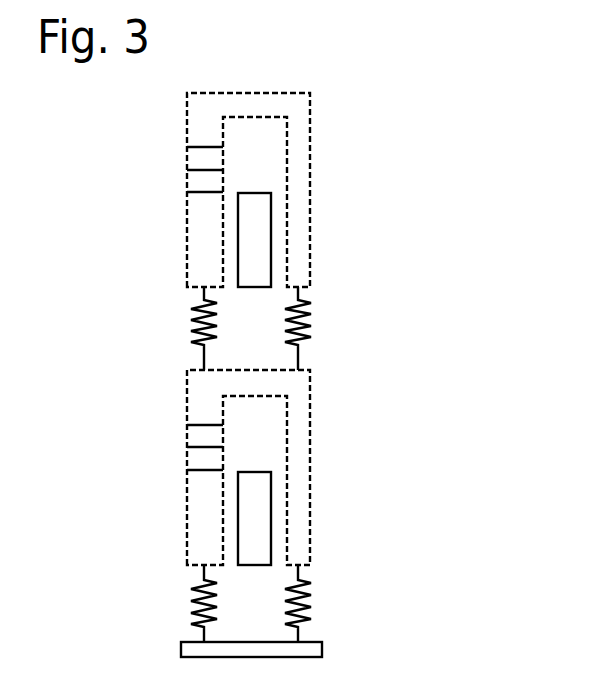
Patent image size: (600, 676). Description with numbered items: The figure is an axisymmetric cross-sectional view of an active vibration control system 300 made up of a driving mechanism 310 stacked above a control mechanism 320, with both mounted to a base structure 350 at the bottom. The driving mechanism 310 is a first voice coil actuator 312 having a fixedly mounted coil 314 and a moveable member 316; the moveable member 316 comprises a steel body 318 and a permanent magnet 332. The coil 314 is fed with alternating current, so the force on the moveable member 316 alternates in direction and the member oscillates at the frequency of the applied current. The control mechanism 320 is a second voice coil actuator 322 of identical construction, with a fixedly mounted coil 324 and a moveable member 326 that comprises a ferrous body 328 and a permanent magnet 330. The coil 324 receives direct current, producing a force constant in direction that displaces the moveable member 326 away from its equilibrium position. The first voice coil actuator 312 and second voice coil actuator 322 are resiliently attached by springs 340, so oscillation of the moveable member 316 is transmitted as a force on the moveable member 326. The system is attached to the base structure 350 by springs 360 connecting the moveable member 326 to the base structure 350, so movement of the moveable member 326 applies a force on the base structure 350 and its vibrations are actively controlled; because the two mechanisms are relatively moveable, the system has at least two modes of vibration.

The active vibration control system 300 is at (373, 72).
The driving mechanism 310 is at (343, 137).
The first voice coil actuator 312 is at (335, 202).
The coil 314 is at (255, 251).
The moveable member 316 is at (173, 132).
The body 318 is at (193, 238).
The permanent magnet 332 is at (187, 178).
The springs 340 is at (195, 322).
The control mechanism 320 is at (343, 402).
The second voice coil actuator 322 is at (335, 488).
The coil 324 is at (255, 532).
The moveable member 326 is at (173, 405).
The body 328 is at (193, 500).
The permanent magnet 330 is at (193, 458).
The springs 360 is at (198, 595).
The base structure 350 is at (185, 650).